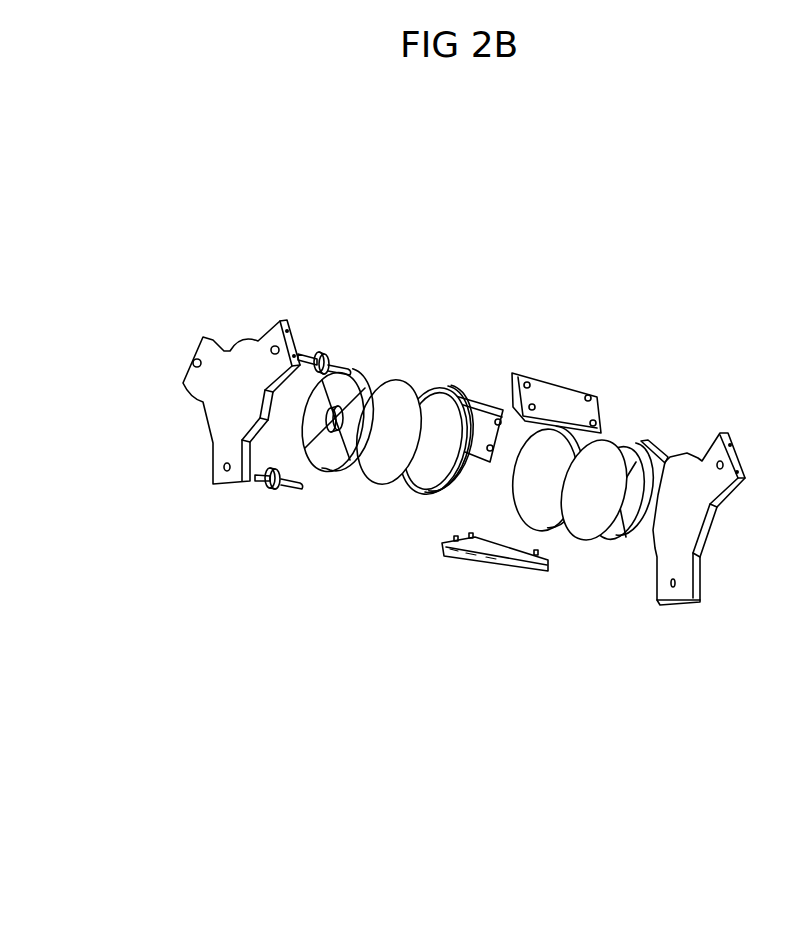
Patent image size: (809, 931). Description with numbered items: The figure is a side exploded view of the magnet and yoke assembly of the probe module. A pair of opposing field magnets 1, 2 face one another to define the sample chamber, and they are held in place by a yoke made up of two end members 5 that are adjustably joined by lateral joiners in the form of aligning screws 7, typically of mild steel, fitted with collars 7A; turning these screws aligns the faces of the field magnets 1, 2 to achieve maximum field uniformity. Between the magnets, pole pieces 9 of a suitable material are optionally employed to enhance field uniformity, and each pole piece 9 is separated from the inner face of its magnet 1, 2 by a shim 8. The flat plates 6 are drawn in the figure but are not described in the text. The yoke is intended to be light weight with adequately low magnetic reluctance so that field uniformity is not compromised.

The field magnet 1 is at (347, 377).
The field magnet 2 is at (617, 528).
The end member 5 is at (480, 426).
The mounting plate 6 is at (527, 459).
The aligning screw 7 is at (294, 529).
The collar 7A is at (282, 531).
The shim 8 is at (492, 425).
The pole piece 9 is at (501, 432).